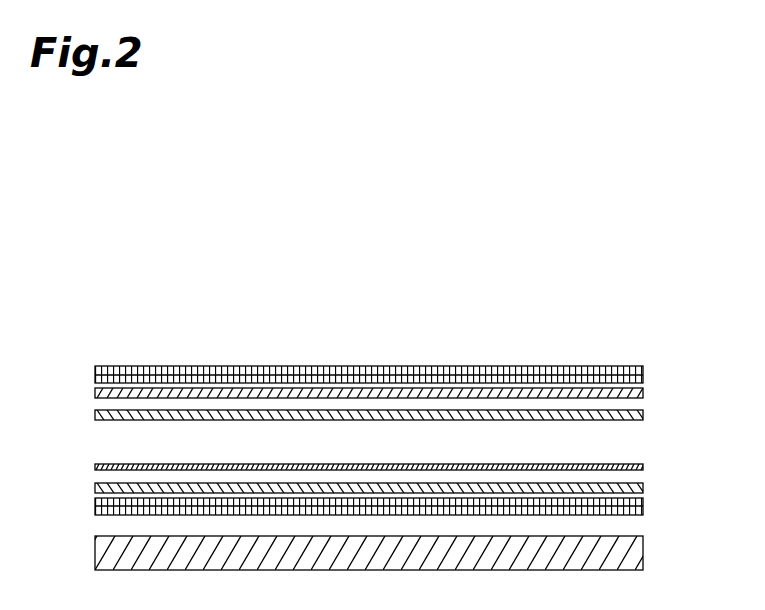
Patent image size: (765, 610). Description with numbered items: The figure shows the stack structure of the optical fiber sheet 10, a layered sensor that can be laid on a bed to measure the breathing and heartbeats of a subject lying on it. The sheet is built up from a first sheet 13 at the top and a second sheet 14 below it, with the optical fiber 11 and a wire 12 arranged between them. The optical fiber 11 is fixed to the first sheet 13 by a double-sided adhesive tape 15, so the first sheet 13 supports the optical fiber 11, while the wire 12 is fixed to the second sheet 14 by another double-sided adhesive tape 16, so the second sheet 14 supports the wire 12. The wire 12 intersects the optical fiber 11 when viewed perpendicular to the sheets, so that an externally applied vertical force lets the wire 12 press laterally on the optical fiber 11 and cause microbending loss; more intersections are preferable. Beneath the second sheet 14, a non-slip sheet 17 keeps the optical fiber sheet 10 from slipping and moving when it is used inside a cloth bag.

The optical fiber sheet 10 is at (619, 324).
The optical fiber 11 is at (643, 413).
The wire 12 is at (643, 467).
The first sheet 13 is at (643, 369).
The second sheet 14 is at (643, 510).
The double-sided adhesive tape 15 is at (643, 393).
The double-sided adhesive tape 16 is at (643, 488).
The non-slip sheet 17 is at (633, 553).